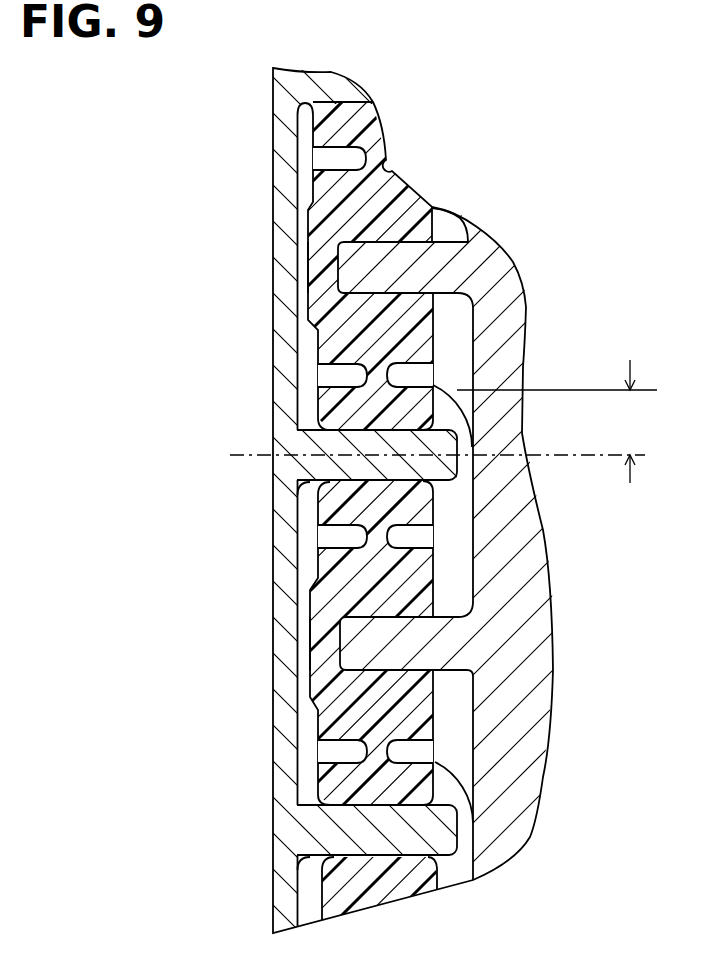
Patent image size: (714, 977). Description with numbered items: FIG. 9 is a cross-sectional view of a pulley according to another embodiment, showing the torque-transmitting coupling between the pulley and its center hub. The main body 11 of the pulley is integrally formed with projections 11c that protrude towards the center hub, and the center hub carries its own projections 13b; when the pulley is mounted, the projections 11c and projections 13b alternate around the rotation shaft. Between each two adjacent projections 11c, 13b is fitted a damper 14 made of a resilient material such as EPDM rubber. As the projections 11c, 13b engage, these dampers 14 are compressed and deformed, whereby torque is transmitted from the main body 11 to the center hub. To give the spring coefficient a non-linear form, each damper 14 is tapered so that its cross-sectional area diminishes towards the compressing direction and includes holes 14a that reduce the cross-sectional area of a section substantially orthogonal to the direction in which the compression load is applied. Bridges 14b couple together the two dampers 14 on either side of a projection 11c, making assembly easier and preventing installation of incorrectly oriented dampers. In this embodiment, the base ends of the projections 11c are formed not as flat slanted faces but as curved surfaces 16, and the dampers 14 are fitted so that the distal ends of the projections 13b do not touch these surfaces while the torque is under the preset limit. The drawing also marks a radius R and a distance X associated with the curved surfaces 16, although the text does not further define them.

The main body 11 is at (497, 268).
The projections 11c is at (390, 257).
The projections 13b is at (365, 422).
The damper 14 is at (390, 182).
The holes 14a is at (333, 538).
The bridges 14b is at (324, 262).
The curved surfaces 16 is at (447, 407).
The radius R is at (445, 423).
The distance X is at (445, 421).